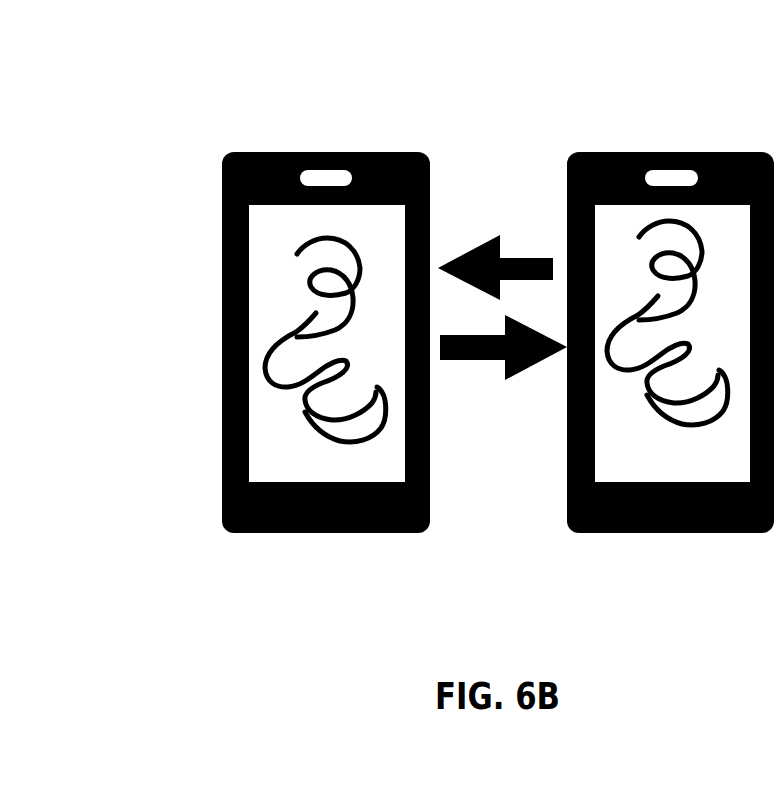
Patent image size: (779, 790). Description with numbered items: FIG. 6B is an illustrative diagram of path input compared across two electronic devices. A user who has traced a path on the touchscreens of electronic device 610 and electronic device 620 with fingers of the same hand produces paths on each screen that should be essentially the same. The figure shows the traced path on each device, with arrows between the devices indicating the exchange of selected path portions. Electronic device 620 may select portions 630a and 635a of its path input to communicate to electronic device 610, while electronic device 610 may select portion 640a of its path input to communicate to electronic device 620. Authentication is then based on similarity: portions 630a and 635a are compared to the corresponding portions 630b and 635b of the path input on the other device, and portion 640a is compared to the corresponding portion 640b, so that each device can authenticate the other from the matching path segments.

The electronic device 610 is at (313, 141).
The electronic device 620 is at (690, 141).
The portion of the path input 630a is at (720, 229).
The portion of the path input 630b is at (368, 229).
The portion of the path input 635a is at (670, 422).
The portion of the path input 635b is at (318, 435).
The portion of the path input 640a is at (333, 360).
The portion of the path input 640b is at (680, 343).